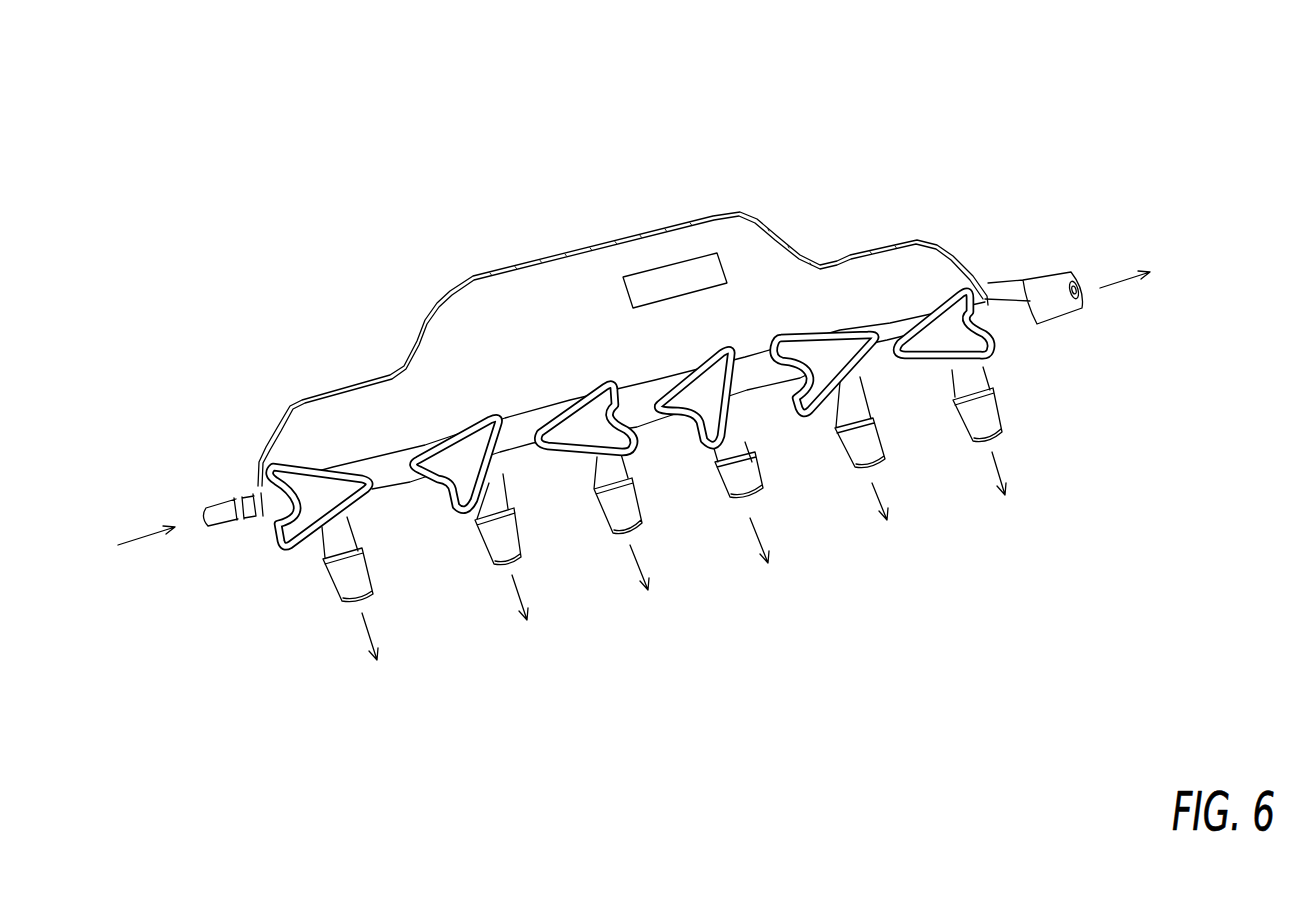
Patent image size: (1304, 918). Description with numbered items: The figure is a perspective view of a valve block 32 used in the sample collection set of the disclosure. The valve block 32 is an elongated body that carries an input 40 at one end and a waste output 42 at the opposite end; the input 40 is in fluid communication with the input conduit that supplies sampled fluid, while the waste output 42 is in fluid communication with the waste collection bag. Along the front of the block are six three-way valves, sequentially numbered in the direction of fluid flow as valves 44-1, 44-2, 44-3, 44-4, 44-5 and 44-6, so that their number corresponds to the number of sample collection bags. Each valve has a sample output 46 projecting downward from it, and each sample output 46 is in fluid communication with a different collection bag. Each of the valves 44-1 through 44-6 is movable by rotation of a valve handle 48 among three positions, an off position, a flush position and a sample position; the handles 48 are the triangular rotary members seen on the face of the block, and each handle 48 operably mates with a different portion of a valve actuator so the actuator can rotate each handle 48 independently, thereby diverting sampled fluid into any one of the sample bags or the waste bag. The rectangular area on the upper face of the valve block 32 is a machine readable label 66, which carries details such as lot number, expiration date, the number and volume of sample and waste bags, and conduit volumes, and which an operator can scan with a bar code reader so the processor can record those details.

The valve block 32 is at (948, 119).
The input 40 is at (225, 527).
The waste output 42 is at (1057, 313).
The first three-way valve 44-1 is at (323, 468).
The second three-way valve 44-2 is at (453, 428).
The third three-way valve 44-3 is at (572, 400).
The fourth three-way valve 44-4 is at (693, 367).
The fifth three-way valve 44-5 is at (830, 338).
The sixth three-way valve 44-6 is at (950, 262).
The sample output 46 is at (332, 588).
The valve handle 48 is at (333, 512).
The machine readable label 66 is at (705, 265).